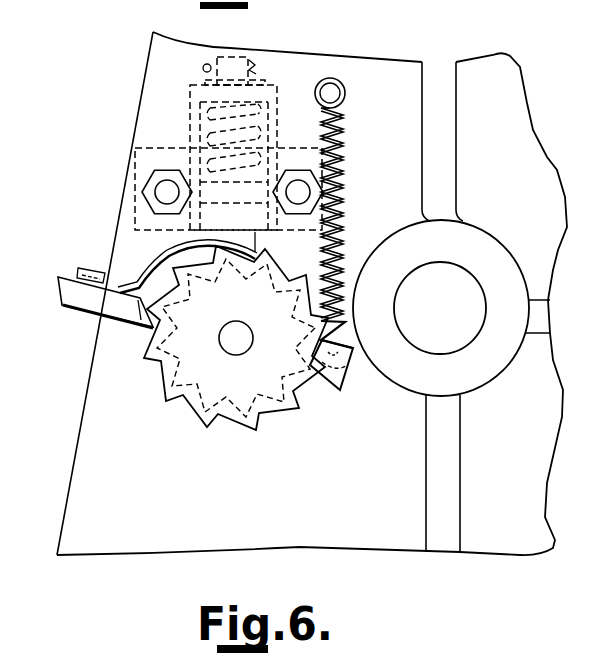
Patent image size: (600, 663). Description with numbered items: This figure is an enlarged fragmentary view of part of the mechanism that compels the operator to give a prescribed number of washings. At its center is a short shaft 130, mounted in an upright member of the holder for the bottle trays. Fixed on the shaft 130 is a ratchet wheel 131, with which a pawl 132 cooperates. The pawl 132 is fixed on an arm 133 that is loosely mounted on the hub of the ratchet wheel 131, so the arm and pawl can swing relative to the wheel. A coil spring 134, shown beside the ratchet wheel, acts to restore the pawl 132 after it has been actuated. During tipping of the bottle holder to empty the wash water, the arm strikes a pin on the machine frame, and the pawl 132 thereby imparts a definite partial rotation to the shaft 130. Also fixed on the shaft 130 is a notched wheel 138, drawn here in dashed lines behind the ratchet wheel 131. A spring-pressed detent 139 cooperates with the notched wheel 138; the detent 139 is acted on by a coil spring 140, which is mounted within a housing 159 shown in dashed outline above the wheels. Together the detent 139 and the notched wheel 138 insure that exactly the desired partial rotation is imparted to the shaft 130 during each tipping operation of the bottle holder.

The short shaft 130 is at (251, 340).
The ratchet wheel 131 is at (230, 422).
The pawl 132 is at (150, 248).
The arm 133 is at (88, 313).
The coil spring 134 is at (353, 205).
The notched wheel 138 is at (168, 370).
The detent 139 is at (262, 252).
The coil spring 140 is at (205, 127).
The housing 159 is at (185, 88).